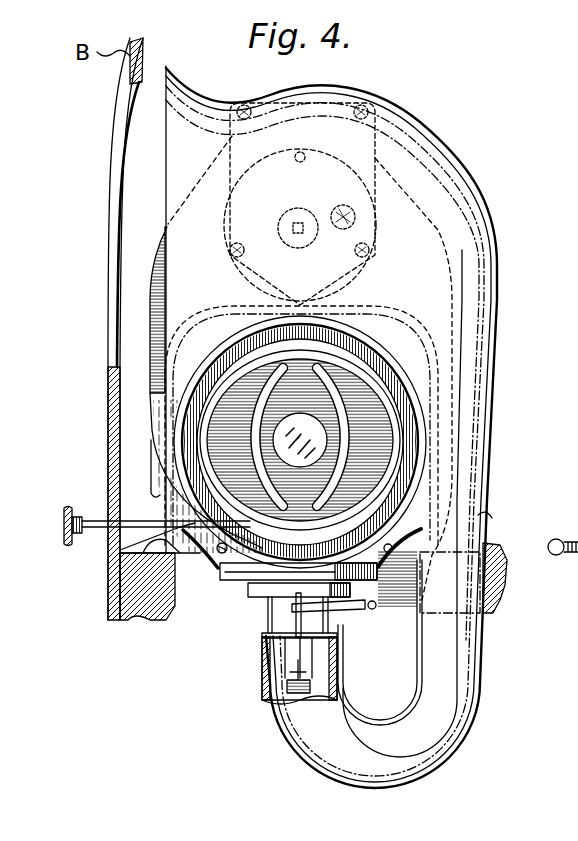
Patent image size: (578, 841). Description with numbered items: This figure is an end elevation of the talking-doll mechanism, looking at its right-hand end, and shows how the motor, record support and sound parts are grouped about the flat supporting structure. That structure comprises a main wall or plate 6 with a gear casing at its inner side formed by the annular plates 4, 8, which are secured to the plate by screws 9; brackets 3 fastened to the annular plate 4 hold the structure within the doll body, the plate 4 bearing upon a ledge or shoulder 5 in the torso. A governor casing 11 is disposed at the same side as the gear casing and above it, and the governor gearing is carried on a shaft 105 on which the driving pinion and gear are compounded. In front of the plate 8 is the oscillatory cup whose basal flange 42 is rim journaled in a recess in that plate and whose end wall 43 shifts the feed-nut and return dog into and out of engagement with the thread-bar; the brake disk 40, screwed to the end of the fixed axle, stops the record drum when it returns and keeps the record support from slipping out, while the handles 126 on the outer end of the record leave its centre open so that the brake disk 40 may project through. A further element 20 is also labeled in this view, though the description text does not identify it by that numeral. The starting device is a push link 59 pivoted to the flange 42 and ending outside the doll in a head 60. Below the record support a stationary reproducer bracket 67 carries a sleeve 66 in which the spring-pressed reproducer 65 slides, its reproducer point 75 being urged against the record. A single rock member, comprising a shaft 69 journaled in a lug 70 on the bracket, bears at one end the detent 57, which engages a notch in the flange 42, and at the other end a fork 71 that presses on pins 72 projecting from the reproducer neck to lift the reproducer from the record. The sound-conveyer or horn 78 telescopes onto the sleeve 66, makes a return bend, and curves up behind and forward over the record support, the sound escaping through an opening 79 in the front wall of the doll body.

The brackets 3 is at (155, 478).
The annular plate 4 is at (104, 459).
The ledge or shoulder 5 is at (140, 618).
The wall or plate 6 is at (152, 320).
The annular plate 8 is at (168, 420).
The screws 9 is at (382, 322).
The governor casing 11 is at (375, 210).
The stator ring 20 is at (385, 392).
The brake disk 40 is at (313, 425).
The basal flange 42 is at (200, 398).
The end wall of the cup 43 is at (380, 442).
The detent 57 is at (273, 582).
The push link 59 is at (165, 527).
The head 60 is at (66, 518).
The reproducer 65 is at (245, 612).
The sleeve 66 is at (337, 660).
The reproducer bracket 67 is at (286, 648).
The shaft 69 is at (372, 610).
The lug 70 is at (420, 603).
The fork 71 is at (332, 608).
The pins 72 is at (266, 703).
The reproducer point 75 is at (292, 560).
The sound-conveyer or horn 78 is at (510, 400).
The opening 79 is at (113, 233).
The shaft 105 is at (304, 162).
The handles 126 is at (365, 470).